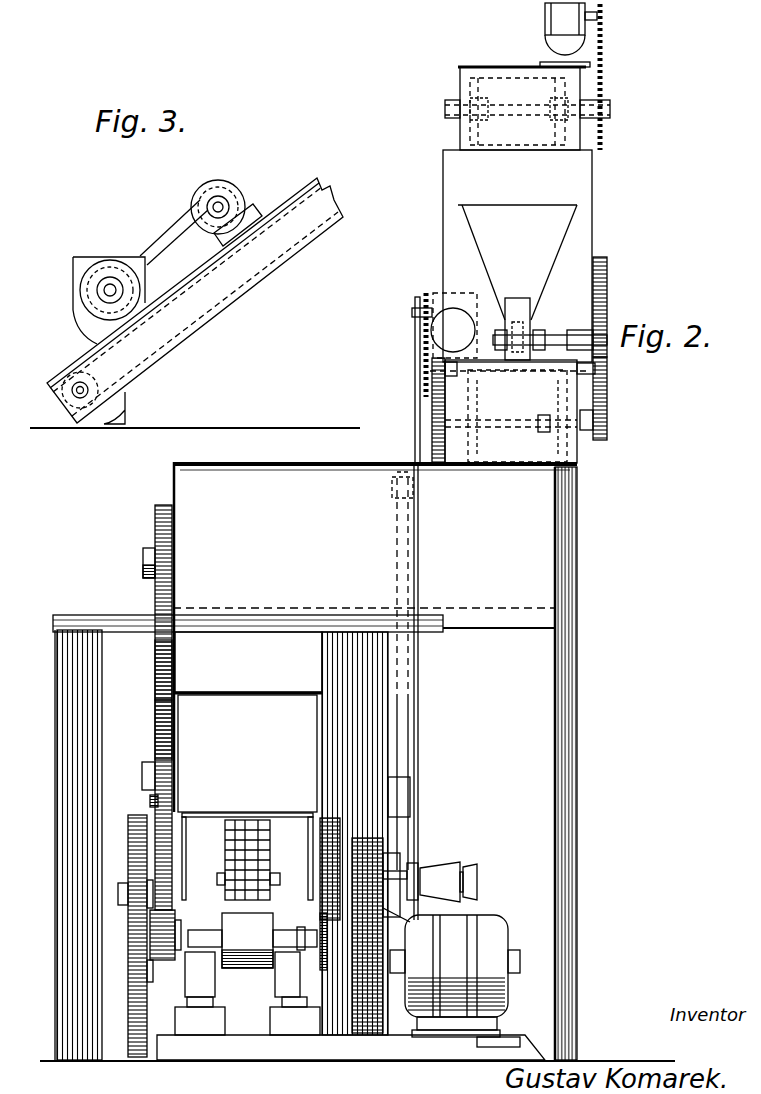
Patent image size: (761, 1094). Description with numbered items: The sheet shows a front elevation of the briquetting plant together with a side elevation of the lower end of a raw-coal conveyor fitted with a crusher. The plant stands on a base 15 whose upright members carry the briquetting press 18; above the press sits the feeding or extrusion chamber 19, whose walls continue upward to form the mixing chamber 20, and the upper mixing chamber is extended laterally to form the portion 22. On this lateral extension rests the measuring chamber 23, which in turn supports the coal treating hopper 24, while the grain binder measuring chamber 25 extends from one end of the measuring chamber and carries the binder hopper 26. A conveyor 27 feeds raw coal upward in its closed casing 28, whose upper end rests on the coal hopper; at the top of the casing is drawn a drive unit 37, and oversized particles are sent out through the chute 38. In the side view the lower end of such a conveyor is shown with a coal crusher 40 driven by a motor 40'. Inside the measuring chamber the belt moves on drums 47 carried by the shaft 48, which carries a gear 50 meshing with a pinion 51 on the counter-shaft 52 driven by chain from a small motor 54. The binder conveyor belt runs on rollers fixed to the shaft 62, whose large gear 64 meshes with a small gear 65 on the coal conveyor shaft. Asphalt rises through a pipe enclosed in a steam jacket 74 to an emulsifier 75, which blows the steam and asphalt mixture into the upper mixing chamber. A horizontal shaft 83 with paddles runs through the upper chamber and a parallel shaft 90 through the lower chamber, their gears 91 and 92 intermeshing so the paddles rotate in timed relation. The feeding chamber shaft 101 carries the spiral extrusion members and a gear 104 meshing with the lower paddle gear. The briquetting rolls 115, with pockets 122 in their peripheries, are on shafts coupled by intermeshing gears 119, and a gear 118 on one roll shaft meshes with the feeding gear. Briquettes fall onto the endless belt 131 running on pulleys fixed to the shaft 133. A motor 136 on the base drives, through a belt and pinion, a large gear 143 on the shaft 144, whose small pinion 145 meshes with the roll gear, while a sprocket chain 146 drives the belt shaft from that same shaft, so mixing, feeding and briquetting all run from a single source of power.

In FIG. 2, the base 15 is at (300, 1048).
In FIG. 2, the briquetting press 18 is at (249, 841).
In FIG. 2, the feeding or extrusion chamber 19 is at (247, 753).
In FIG. 2, the mixing chamber 20 is at (188, 666).
In FIG. 2, the laterally extended portion 22 is at (548, 598).
In FIG. 2, the measuring chamber 23 is at (540, 451).
In FIG. 2, the coal treating hopper 24 is at (580, 190).
In FIG. 2, the grain binder measuring chamber 25 is at (516, 306).
In FIG. 2, the binder hopper 26 is at (368, 763).
In FIG. 3, the conveyor 27 is at (300, 233).
In FIG. 2, the conveyor 27 is at (193, 493).
In FIG. 2, the casing 28 is at (462, 133).
In FIG. 2, the motor 37 is at (563, 22).
In FIG. 2, the chute 38 is at (604, 78).
In FIG. 3, the coal crusher 40 is at (119, 272).
In FIG. 3, the motor 40' is at (228, 203).
In FIG. 2, the drums or discs 47 is at (556, 403).
In FIG. 2, the shaft 48 is at (526, 423).
In FIG. 2, the gear 50 is at (432, 443).
In FIG. 2, the pinion 51 is at (435, 371).
In FIG. 2, the counter-shaft 52 is at (545, 370).
In FIG. 2, the small motor 54 is at (438, 292).
In FIG. 2, the shaft 62 is at (540, 336).
In FIG. 2, the large gear 64 is at (605, 282).
In FIG. 2, the small gear 65 is at (606, 422).
In FIG. 2, the steam jacket 74 is at (407, 698).
In FIG. 2, the emulsifier 75 is at (396, 486).
In FIG. 2, the horizontal shaft 83 is at (144, 561).
In FIG. 2, the horizontal shaft 90 is at (144, 700).
In FIG. 2, the gear 91 is at (155, 590).
In FIG. 2, the gear 92 is at (156, 654).
In FIG. 2, the shaft 101 is at (148, 773).
In FIG. 2, the gear 104 is at (152, 800).
In FIG. 2, the briquetting rolls 115 is at (263, 838).
In FIG. 2, the gear 118 is at (145, 859).
In FIG. 2, the intermeshing gears 119 is at (340, 834).
In FIG. 2, the pockets or depressions 122 is at (260, 860).
In FIG. 2, the briquette conveying endless belt 131 is at (252, 940).
In FIG. 2, the shaft 133 is at (208, 919).
In FIG. 2, the motor 136 is at (490, 927).
In FIG. 2, the large gear 143 is at (137, 889).
In FIG. 2, the shaft 144 is at (140, 963).
In FIG. 2, the small pinion 145 is at (156, 935).
In FIG. 2, the sprocket chain 146 is at (318, 956).